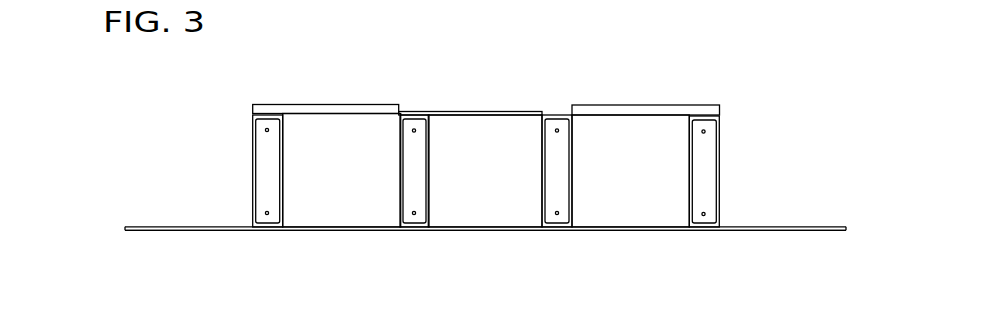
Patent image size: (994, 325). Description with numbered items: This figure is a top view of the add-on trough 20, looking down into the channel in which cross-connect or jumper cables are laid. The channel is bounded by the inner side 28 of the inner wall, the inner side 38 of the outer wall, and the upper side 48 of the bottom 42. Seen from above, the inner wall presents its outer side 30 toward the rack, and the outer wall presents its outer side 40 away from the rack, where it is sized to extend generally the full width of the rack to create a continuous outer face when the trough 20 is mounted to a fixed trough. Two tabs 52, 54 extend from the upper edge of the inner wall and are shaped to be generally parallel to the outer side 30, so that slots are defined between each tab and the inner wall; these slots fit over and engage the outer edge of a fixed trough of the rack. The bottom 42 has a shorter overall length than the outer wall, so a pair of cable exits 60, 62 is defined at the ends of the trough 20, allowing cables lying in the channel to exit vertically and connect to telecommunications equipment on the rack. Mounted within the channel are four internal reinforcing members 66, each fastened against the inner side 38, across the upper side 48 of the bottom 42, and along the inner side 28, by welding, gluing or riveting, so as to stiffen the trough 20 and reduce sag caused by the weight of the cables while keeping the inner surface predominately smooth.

The add-on trough 20 is at (167, 137).
The inner side of inner wall 28 is at (477, 115).
The outer side of inner wall 30 is at (510, 113).
The inner side of outer wall 38 is at (147, 226).
The outer side of outer wall 40 is at (185, 228).
The bottom 42 is at (306, 182).
The upper side of bottom 48 is at (502, 180).
The tab 52 is at (360, 107).
The tab 54 is at (665, 106).
The cable exit 60 is at (212, 180).
The cable exit 62 is at (803, 182).
The internal reinforcing members 66 is at (273, 138).